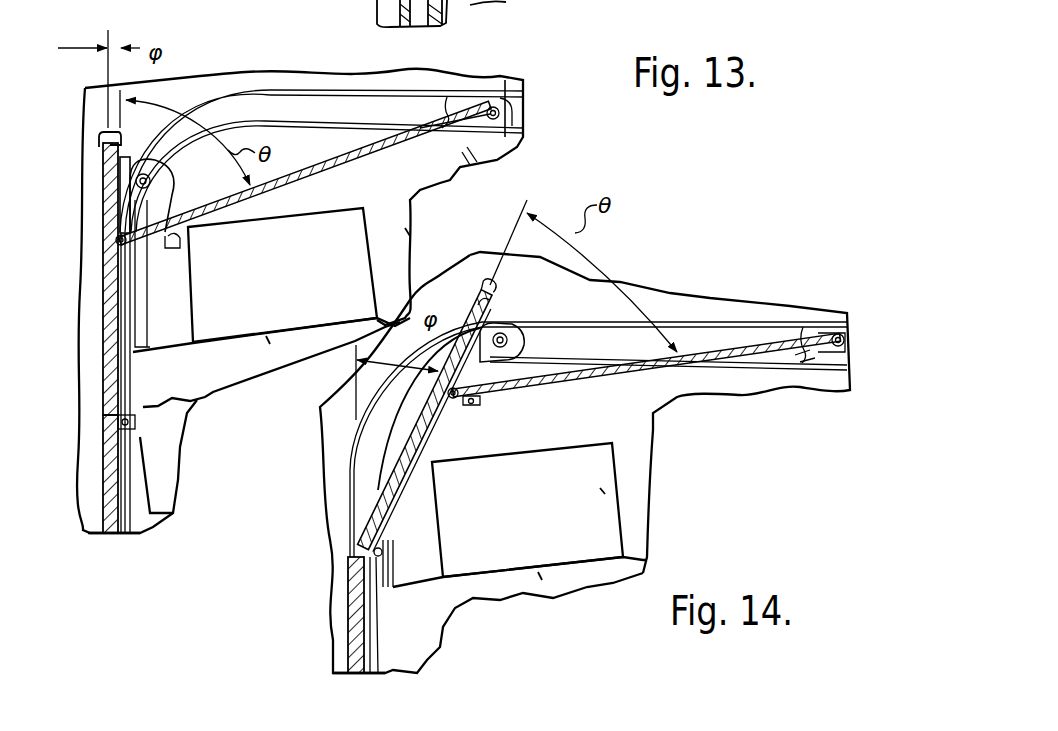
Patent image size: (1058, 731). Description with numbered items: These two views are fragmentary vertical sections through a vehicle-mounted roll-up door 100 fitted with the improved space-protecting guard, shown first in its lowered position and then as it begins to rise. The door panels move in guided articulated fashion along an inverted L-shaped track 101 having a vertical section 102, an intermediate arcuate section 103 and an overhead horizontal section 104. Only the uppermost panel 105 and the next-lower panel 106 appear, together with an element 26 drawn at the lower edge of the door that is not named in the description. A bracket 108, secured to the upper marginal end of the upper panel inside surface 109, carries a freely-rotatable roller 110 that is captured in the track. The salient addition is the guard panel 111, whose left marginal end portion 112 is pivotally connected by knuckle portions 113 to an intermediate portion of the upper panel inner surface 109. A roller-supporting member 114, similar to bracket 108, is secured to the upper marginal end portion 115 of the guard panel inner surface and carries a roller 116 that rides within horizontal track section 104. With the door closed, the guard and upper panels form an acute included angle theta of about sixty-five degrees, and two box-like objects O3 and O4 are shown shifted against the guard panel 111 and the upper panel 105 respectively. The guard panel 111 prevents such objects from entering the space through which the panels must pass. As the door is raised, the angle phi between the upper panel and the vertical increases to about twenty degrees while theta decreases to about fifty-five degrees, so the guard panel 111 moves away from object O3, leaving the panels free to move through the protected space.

In FIG. 13, the door sill joint 26 is at (152, 407).
In FIG. 14, the door sill joint 26 is at (342, 560).
In FIG. 13, the vehicle-mounted rollup door 100 is at (100, 455).
In FIG. 14, the vehicle-mounted rollup door 100 is at (332, 608).
In FIG. 13, the track 101 is at (287, 86).
In FIG. 14, the track 101 is at (610, 316).
In FIG. 13, the vertical section 102 is at (180, 493).
In FIG. 14, the vertical section 102 is at (403, 543).
In FIG. 13, the arcuate section 103 is at (178, 118).
In FIG. 14, the arcuate section 103 is at (323, 416).
In FIG. 13, the horizontal section 104 is at (514, 98).
In FIG. 14, the horizontal section 104 is at (704, 313).
In FIG. 13, the uppermost panel 105 is at (103, 319).
In FIG. 14, the uppermost panel 105 is at (352, 449).
In FIG. 13, the next-lower panel 106 is at (95, 535).
In FIG. 14, the next-lower panel 106 is at (334, 642).
In FIG. 13, the bracket 108 is at (160, 200).
In FIG. 14, the bracket 108 is at (500, 320).
In FIG. 13, the upper panel inside surface 109 is at (135, 276).
In FIG. 14, the upper panel inside surface 109 is at (497, 297).
In FIG. 13, the roller 110 is at (172, 176).
In FIG. 14, the roller 110 is at (537, 342).
In FIG. 13, the guard panel 111 is at (305, 189).
In FIG. 14, the guard panel 111 is at (655, 420).
In FIG. 13, the left marginal end portion 112 is at (181, 245).
In FIG. 14, the left marginal end portion 112 is at (495, 398).
In FIG. 13, the knuckle portions 113 is at (104, 244).
In FIG. 14, the knuckle portions 113 is at (455, 400).
In FIG. 13, the roller-supporting member 114 is at (466, 152).
In FIG. 14, the roller-supporting member 114 is at (800, 372).
In FIG. 13, the upper marginal end portion 115 is at (447, 97).
In FIG. 14, the upper marginal end portion 115 is at (804, 326).
In FIG. 13, the roller 116 is at (528, 120).
In FIG. 14, the roller 116 is at (852, 334).
In FIG. 13, the box-like object O3 is at (407, 236).
In FIG. 14, the box-like object O3 is at (603, 492).
In FIG. 13, the box-like object O4 is at (268, 343).
In FIG. 14, the box-like object O4 is at (540, 577).